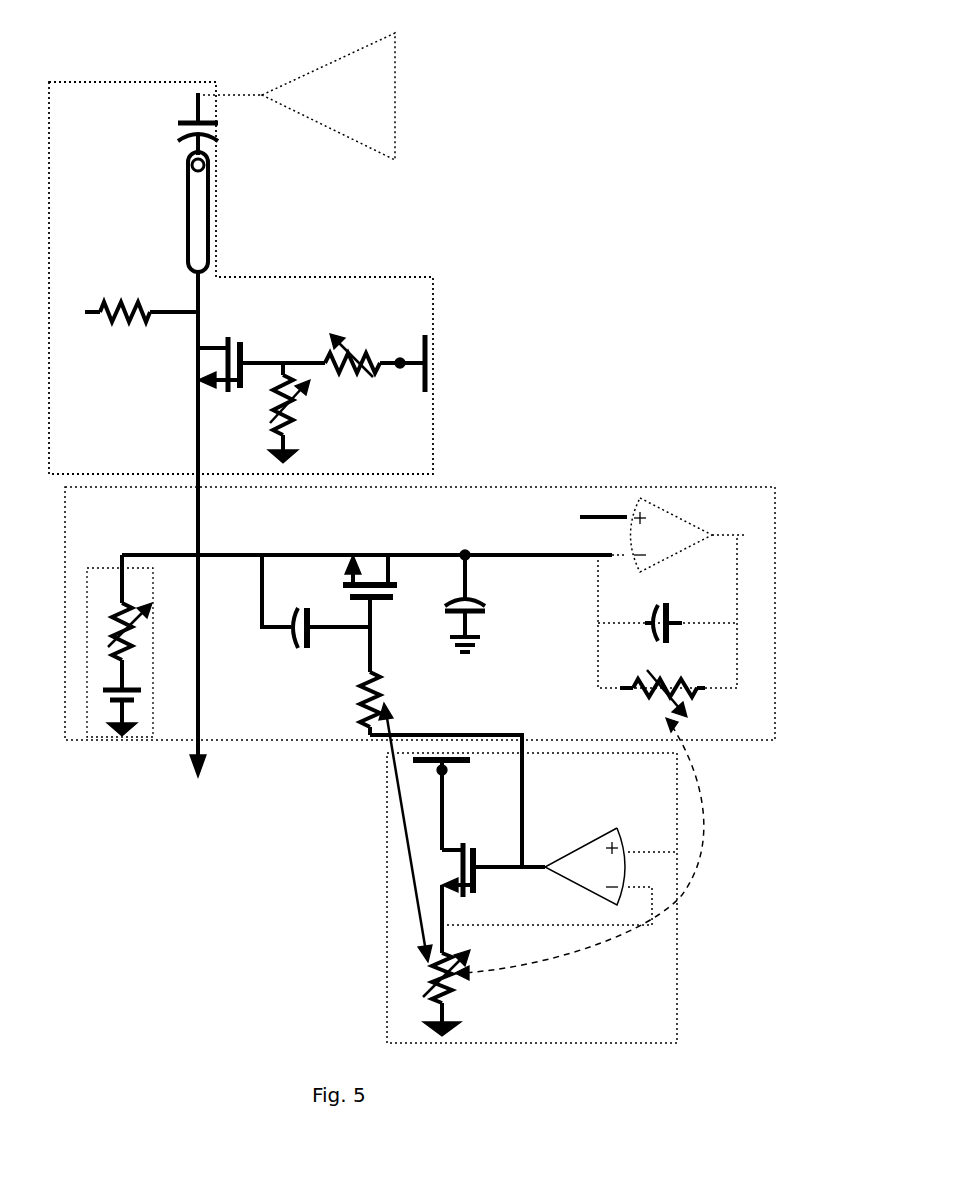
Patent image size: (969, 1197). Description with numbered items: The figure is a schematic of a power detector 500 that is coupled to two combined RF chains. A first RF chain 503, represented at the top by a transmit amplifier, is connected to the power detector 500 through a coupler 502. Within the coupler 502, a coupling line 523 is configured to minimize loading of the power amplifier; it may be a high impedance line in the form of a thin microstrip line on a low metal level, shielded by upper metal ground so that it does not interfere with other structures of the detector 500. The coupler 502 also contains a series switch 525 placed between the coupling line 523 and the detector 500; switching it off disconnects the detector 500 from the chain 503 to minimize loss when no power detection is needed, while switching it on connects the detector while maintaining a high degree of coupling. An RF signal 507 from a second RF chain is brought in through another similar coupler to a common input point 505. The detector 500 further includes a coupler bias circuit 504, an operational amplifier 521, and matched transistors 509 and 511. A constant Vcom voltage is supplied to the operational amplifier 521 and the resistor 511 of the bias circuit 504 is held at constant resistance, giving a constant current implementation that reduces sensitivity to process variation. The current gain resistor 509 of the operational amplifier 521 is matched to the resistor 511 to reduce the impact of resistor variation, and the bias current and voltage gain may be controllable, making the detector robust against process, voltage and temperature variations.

The power detector 500 is at (790, 600).
The coupler 502 is at (83, 82).
The first RF chain 503 is at (222, 97).
The coupler bias circuit 504 is at (385, 848).
The common input point 505 is at (203, 552).
The RF signal 507 is at (207, 753).
The current gain resistor 509 is at (385, 690).
The resistor 511 is at (425, 967).
The operational amplifier 521 is at (663, 510).
The coupling line 523 is at (210, 212).
The series switch 525 is at (320, 278).